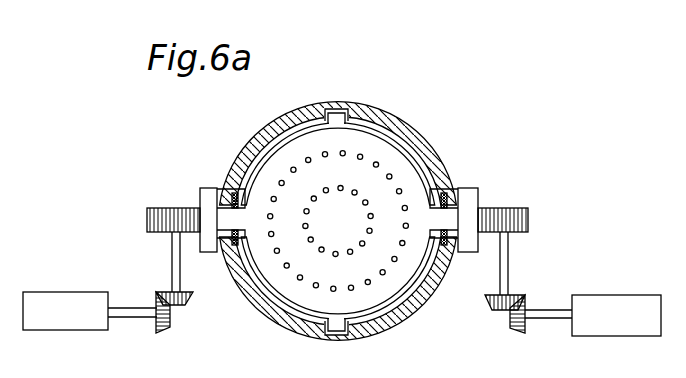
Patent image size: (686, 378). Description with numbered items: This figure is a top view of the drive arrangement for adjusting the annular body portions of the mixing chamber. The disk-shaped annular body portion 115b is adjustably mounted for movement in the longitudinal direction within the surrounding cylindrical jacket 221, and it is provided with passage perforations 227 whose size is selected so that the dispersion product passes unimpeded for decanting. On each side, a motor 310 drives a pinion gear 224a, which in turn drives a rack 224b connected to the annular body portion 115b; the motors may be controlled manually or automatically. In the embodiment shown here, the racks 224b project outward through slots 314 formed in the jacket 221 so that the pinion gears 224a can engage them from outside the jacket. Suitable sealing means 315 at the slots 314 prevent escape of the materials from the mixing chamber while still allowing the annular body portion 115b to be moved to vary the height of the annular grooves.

The cylindrical jacket 221 is at (405, 137).
The annular body portion 115b is at (273, 173).
The perforations 227 is at (357, 190).
The rack 224b is at (208, 202).
The sealing means 315 is at (236, 198).
The slots 314 is at (232, 240).
The pinion gear 224a is at (162, 210).
The motor 310 is at (68, 293).